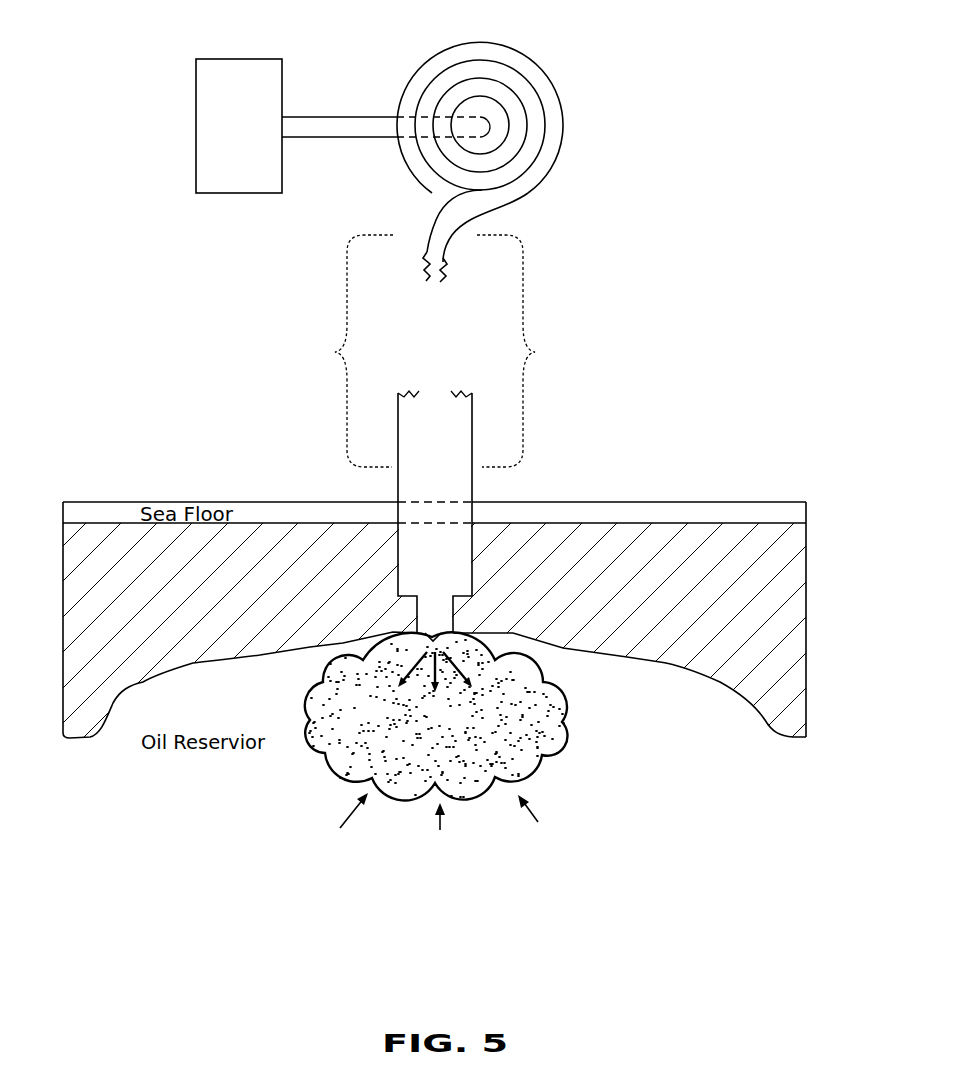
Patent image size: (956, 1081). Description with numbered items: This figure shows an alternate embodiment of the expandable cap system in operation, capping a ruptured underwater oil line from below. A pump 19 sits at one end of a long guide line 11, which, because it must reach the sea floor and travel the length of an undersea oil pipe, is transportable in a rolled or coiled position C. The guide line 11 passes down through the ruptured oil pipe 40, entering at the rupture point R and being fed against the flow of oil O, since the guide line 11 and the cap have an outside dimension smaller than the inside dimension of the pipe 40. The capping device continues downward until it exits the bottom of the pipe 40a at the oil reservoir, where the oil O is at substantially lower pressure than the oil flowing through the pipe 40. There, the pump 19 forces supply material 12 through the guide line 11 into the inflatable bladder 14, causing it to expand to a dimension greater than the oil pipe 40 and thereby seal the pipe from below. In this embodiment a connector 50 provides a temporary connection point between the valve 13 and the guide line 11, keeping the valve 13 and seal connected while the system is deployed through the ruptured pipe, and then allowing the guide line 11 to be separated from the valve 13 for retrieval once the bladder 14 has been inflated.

The pump 19 is at (252, 142).
The guide line 11 is at (308, 116).
The supply material 12 is at (342, 126).
The rolled/coiled position C is at (535, 58).
The connector 50 is at (425, 266).
The rupture point R is at (408, 393).
The pipe 40 is at (447, 473).
The bottom of the pipe 40a is at (412, 632).
The valve 13 is at (437, 637).
The inflatable bladder 14 is at (566, 699).
The oil O is at (330, 838).